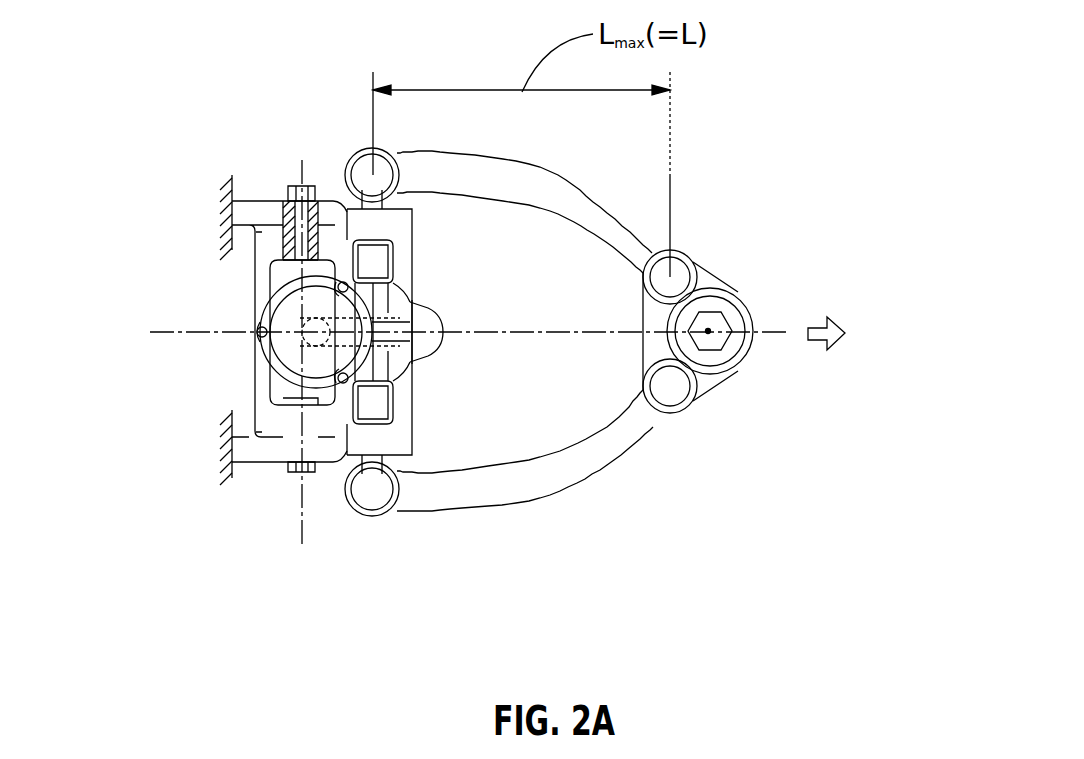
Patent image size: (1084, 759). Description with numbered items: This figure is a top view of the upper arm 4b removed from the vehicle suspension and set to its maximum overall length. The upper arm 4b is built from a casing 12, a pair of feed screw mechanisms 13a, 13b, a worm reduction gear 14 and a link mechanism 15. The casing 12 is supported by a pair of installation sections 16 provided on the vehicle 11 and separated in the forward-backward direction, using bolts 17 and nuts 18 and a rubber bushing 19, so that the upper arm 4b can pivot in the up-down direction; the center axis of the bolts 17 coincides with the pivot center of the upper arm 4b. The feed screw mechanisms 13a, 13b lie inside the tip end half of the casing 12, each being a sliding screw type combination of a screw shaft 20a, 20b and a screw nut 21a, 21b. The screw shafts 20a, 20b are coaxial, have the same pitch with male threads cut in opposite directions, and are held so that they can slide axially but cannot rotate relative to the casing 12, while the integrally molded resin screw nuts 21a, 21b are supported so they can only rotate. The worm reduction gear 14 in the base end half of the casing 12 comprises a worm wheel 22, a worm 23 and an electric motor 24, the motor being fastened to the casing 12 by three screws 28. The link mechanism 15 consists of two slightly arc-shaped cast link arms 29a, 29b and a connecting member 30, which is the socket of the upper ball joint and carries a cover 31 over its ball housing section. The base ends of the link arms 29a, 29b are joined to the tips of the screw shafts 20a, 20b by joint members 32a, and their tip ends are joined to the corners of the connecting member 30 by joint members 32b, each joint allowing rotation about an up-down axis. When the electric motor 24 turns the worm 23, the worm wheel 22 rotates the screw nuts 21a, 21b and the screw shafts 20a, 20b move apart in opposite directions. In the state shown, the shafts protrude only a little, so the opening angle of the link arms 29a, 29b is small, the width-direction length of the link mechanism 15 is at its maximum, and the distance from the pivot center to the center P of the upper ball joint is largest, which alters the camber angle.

The vehicle 11 is at (236, 178).
The casing 12 is at (255, 280).
The feed screw mechanism 13a is at (400, 245).
The feed screw mechanism 13b is at (398, 400).
The worm reduction gear 14 is at (395, 357).
The link mechanism 15 is at (577, 465).
The installation section 16 is at (251, 212).
The bolt 17 is at (313, 200).
The nut 18 is at (270, 264).
The bushing 19 is at (285, 212).
The screw shaft 20a is at (370, 263).
The screw shaft 20b is at (383, 400).
The screw nut 21a is at (412, 298).
The screw nut 21b is at (412, 364).
The worm wheel 22 is at (445, 320).
The worm 23 is at (262, 318).
The electric motor 24 is at (262, 352).
The screw 28 is at (339, 245).
The link arm 29a is at (573, 262).
The link arm 29b is at (572, 398).
The connecting member 30 is at (708, 285).
The cover 31 is at (732, 320).
The joint member 32a is at (385, 147).
The joint member 32b is at (690, 251).
The upper arm 4b is at (674, 197).
The center of the upper ball joint P is at (708, 331).